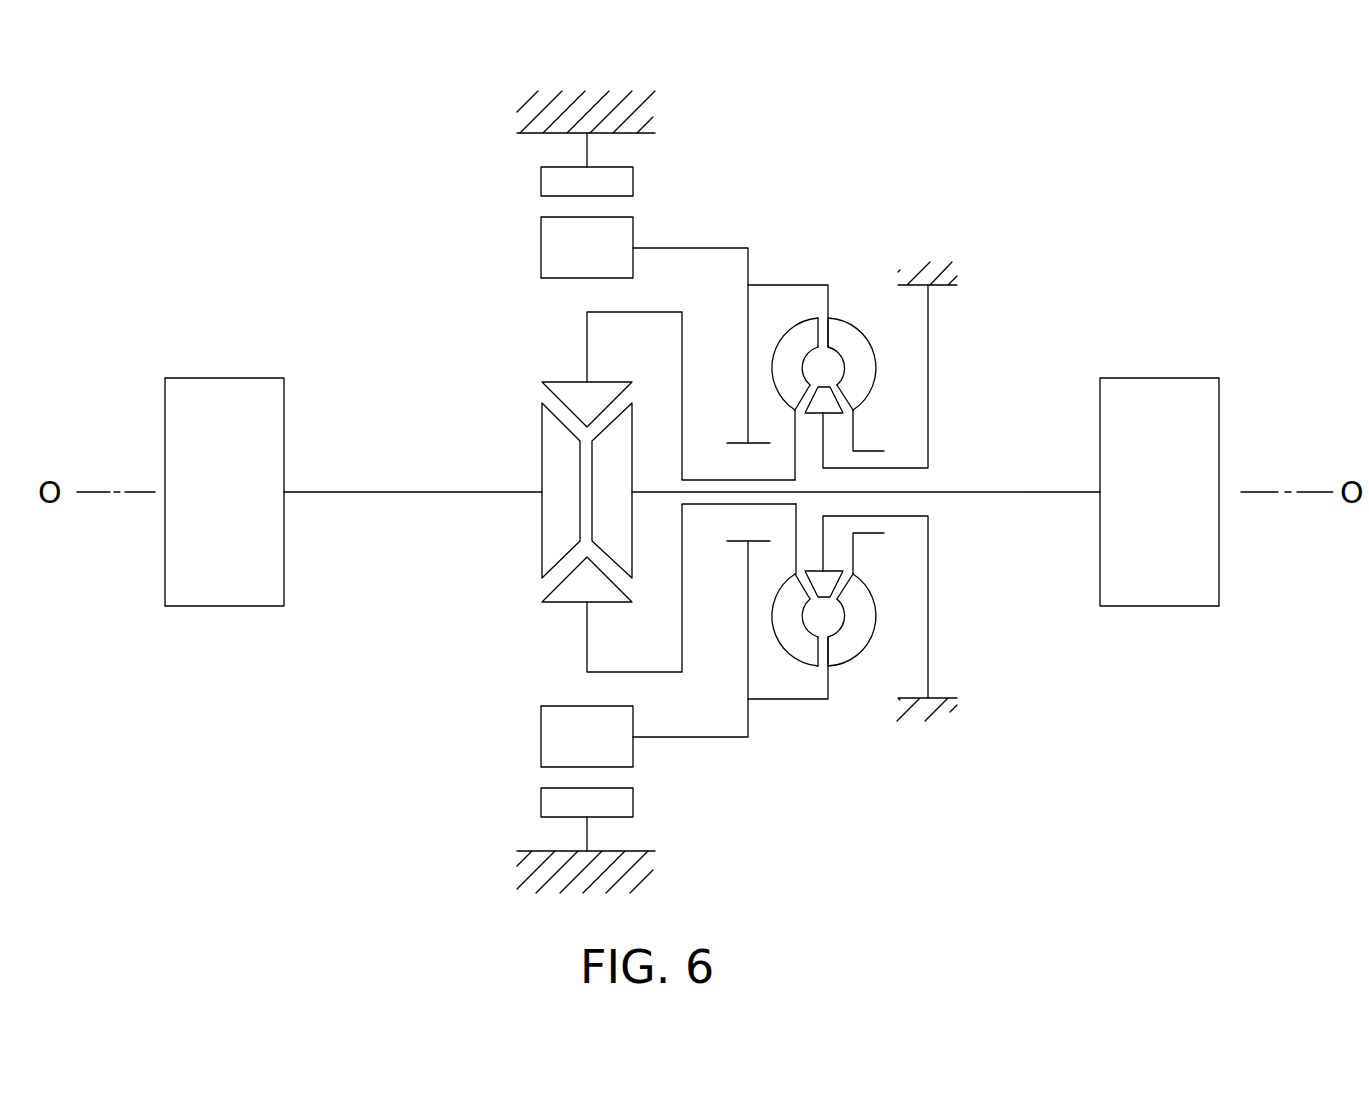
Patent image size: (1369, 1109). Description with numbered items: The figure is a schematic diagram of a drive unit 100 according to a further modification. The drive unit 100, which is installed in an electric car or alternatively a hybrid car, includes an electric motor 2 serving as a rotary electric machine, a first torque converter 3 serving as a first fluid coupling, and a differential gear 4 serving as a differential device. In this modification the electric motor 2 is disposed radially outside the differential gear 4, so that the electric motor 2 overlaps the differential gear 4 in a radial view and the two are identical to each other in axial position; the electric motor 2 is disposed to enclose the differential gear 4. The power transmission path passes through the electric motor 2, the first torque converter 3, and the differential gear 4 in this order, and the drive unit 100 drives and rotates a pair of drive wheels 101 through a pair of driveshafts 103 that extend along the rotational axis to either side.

The drive unit 100 is at (922, 180).
The electric motor 2 is at (522, 203).
The first torque converter 3 is at (855, 295).
The differential gear 4 is at (533, 382).
The drive wheels 101 is at (228, 606).
The driveshafts 103 is at (410, 493).